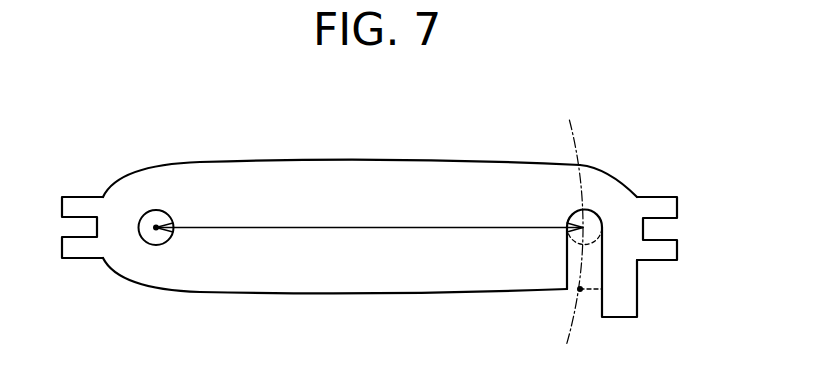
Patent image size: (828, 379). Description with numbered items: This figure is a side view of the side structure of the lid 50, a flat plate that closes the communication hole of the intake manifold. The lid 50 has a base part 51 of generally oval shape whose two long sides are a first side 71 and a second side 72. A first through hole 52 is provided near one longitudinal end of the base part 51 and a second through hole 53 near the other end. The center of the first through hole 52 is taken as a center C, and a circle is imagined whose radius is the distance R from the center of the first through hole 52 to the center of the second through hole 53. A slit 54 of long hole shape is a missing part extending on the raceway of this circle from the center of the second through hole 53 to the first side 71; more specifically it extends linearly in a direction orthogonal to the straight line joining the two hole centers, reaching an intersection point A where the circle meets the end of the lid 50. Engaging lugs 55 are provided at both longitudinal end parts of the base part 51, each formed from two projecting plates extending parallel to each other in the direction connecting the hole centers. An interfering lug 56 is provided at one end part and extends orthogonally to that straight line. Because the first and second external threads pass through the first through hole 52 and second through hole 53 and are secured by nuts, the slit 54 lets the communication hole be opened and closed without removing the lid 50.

The lid 50 is at (372, 223).
The base part 51 is at (370, 173).
The first through hole 52 is at (150, 211).
The second through hole 53 is at (595, 218).
The slit 54 is at (568, 270).
The engaging lugs 55 is at (61, 194).
The interfering lug 56 is at (637, 303).
The first side 71 is at (265, 294).
The second side 72 is at (260, 161).
The center C is at (161, 245).
The distance R is at (366, 229).
The intersection point A is at (578, 291).